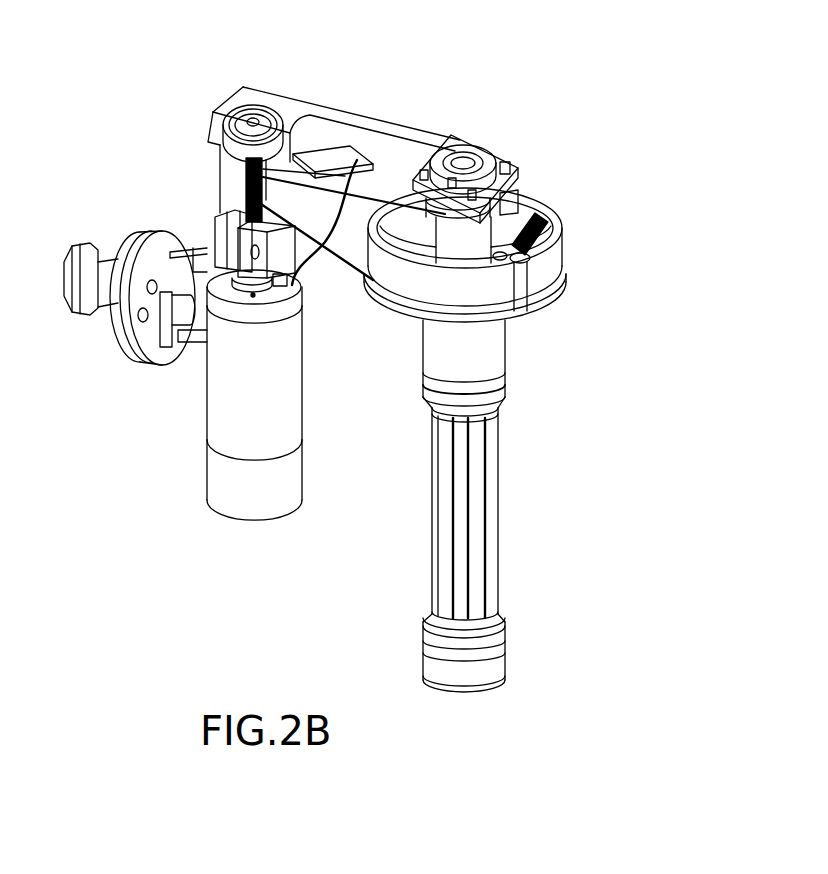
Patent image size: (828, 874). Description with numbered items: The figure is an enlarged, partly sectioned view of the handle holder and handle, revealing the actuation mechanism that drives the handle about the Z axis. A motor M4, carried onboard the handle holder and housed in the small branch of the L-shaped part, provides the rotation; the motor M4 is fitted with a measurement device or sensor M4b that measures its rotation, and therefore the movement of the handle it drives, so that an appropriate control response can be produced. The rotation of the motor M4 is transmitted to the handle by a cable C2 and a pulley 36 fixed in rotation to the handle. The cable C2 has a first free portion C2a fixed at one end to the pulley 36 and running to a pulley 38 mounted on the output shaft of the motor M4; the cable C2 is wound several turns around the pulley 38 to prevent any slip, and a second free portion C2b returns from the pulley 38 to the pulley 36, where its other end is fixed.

The cable C2 is at (362, 187).
The first free portion of the cable C2a is at (348, 262).
The second free portion of the cable C2b is at (372, 192).
The pulley 36 is at (542, 275).
The pulley 38 is at (250, 183).
The motor M4 is at (240, 392).
The sensor M4b is at (235, 497).